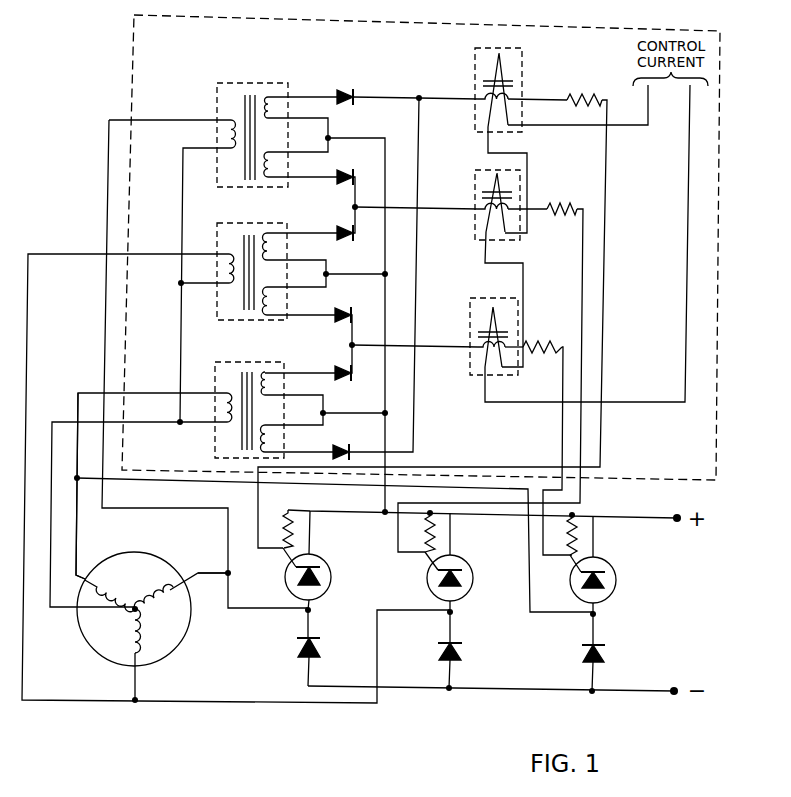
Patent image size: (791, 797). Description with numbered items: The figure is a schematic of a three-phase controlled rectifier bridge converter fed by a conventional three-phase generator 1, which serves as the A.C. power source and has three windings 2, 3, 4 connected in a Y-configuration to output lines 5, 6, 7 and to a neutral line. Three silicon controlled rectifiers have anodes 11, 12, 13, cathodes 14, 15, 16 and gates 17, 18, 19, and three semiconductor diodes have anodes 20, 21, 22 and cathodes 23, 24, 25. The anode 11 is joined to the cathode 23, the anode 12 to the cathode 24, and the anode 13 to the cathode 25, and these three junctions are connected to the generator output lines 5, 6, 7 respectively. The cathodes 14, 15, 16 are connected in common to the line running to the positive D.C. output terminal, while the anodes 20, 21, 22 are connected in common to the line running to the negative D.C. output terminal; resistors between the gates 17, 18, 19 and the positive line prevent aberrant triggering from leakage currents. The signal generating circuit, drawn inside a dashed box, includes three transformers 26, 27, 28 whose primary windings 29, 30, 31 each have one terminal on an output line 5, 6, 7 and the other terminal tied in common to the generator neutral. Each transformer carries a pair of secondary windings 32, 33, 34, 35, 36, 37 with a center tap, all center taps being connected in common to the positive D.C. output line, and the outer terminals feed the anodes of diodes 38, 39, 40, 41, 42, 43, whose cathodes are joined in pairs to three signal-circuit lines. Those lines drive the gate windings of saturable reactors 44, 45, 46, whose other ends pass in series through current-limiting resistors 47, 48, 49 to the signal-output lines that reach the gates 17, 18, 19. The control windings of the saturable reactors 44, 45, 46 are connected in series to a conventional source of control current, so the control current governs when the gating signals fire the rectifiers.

The three-phase generator 1 is at (145, 609).
The winding 2 is at (155, 590).
The winding 3 is at (140, 635).
The winding 4 is at (108, 588).
The output line 5 is at (210, 573).
The output line 6 is at (138, 685).
The output line 7 is at (80, 573).
The anode 11 is at (305, 578).
The anode 12 is at (443, 580).
The anode 13 is at (585, 585).
The cathode 14 is at (315, 566).
The cathode 15 is at (457, 565).
The cathode 16 is at (598, 568).
The gate 17 is at (288, 552).
The gate 18 is at (432, 559).
The gate 19 is at (570, 558).
The anode 20 is at (312, 656).
The anode 21 is at (455, 660).
The anode 22 is at (600, 660).
The cathode 23 is at (315, 640).
The cathode 24 is at (455, 643).
The cathode 25 is at (598, 645).
The transformer 26 is at (249, 127).
The transformer 27 is at (252, 263).
The transformer 28 is at (246, 398).
The primary winding 29 is at (232, 134).
The primary winding 30 is at (231, 266).
The primary winding 31 is at (230, 412).
The secondary winding 32 is at (270, 110).
The secondary winding 33 is at (270, 163).
The secondary winding 34 is at (270, 245).
The secondary winding 35 is at (268, 302).
The secondary winding 36 is at (268, 385).
The secondary winding 37 is at (266, 438).
The diode 38 is at (346, 92).
The diode 39 is at (349, 174).
The diode 40 is at (342, 238).
The diode 41 is at (347, 304).
The diode 42 is at (342, 384).
The diode 43 is at (346, 444).
The saturable reactor 44 is at (484, 83).
The saturable reactor 45 is at (492, 204).
The saturable reactor 46 is at (497, 325).
The current-limiting resistor 47 is at (578, 96).
The current-limiting resistor 48 is at (558, 210).
The current-limiting resistor 49 is at (553, 338).